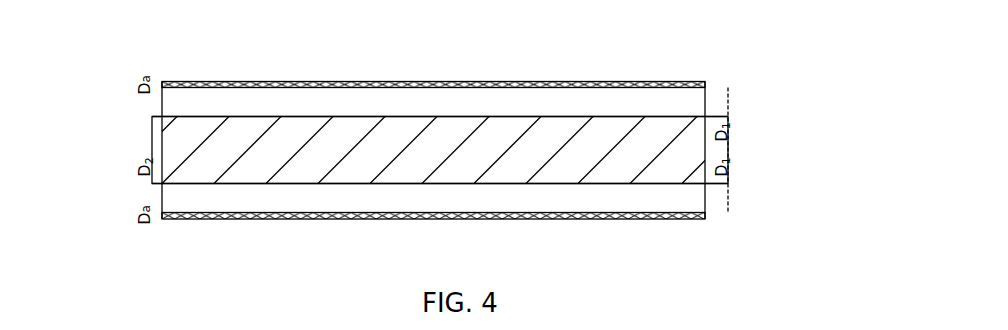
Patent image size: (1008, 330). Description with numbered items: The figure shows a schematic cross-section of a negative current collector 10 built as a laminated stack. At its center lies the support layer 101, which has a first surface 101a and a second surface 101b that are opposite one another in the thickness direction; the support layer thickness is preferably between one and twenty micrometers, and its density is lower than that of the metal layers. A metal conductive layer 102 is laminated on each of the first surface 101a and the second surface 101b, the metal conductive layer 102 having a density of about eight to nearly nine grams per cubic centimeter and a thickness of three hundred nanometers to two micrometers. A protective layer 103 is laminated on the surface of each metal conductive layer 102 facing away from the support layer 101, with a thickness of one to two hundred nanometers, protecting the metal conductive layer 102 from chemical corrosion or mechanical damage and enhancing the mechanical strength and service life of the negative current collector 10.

The negative current collector 10 is at (444, 21).
The support layer 101 is at (175, 153).
The first surface 101a is at (267, 116).
The second surface 101b is at (268, 184).
The metal conductive layer 102 is at (697, 106).
The protective layer 103 is at (705, 82).